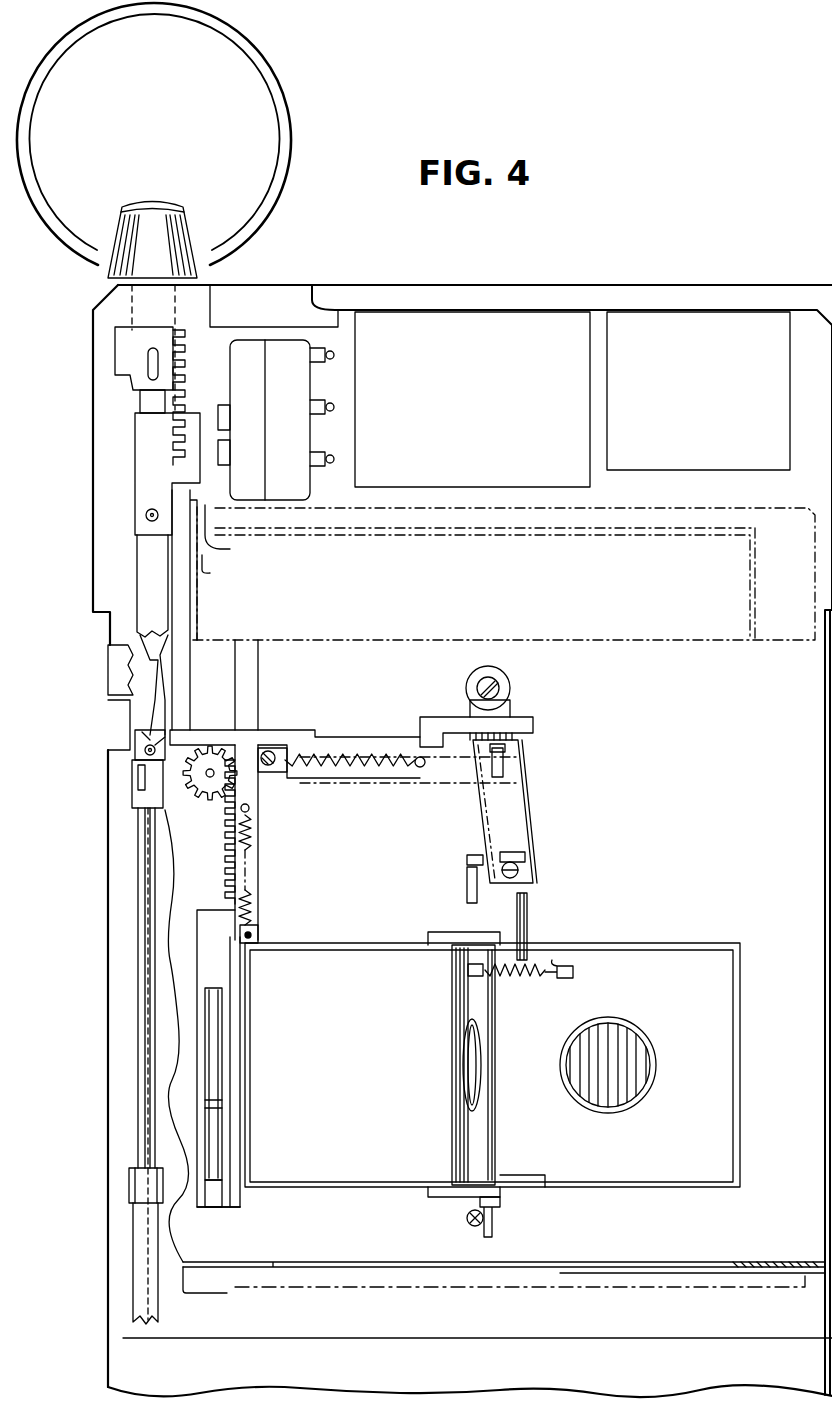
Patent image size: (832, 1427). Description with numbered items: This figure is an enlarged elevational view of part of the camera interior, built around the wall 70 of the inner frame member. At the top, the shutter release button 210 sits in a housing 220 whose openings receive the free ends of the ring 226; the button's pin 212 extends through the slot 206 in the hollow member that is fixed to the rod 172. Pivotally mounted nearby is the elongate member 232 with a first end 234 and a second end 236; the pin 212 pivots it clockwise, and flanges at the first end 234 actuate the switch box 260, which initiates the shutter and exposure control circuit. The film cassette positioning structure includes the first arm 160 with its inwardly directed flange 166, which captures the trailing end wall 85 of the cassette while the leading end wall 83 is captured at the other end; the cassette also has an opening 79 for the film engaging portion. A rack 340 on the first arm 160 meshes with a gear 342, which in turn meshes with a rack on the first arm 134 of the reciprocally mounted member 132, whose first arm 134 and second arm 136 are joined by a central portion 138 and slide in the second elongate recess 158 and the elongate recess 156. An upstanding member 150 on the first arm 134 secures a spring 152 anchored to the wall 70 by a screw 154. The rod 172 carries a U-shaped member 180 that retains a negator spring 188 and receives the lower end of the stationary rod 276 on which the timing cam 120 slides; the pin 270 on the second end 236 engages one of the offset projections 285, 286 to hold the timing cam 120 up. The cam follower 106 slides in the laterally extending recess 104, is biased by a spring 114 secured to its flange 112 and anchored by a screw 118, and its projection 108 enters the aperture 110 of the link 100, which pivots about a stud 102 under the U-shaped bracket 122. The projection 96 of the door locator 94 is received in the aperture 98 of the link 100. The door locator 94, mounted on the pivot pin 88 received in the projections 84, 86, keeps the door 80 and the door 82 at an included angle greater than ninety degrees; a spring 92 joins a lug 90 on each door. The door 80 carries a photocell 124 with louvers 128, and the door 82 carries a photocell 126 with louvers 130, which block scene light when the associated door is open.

The wall 70 is at (674, 784).
The ring 226 is at (272, 96).
The shutter release button 210 is at (158, 200).
The housing 220 is at (170, 238).
The pin 212 is at (148, 352).
The slot 206 is at (148, 364).
The rack 340 is at (183, 382).
The switch box 260 is at (290, 388).
The first end 234 is at (140, 448).
The elongate member 232 is at (112, 504).
The second end 236 is at (148, 594).
The offset projection 286 is at (128, 665).
The offset projection 285 is at (163, 680).
The first arm 160 is at (190, 616).
The inwardly directed flange 166 is at (219, 549).
The opening 79 is at (219, 569).
The trailing end wall 85 is at (487, 510).
The second elongate recess 158 is at (262, 672).
The laterally extending recess 104 is at (333, 735).
The screw 118 is at (268, 768).
The spring 114 is at (310, 770).
The flange 112 is at (418, 768).
The cam follower 106 is at (472, 772).
The U-shaped bracket 122 is at (442, 717).
The stud 102 is at (502, 688).
The link 100 is at (497, 815).
The projection 108 is at (505, 765).
The aperture 110 is at (505, 748).
The aperture 98 is at (525, 856).
The projection 96 is at (519, 870).
The door locator 94 is at (528, 905).
The door 82 is at (690, 966).
The projection 86 is at (535, 956).
The lug 90 is at (468, 970).
The spring 92 is at (513, 978).
The door 80 is at (452, 1012).
The louvers 128 is at (480, 1050).
The photocell 124 is at (478, 1090).
The photocell 126 is at (622, 1100).
The louvers 130 is at (635, 1065).
The projection 84 is at (518, 1178).
The pivot pin 88 is at (483, 1222).
The leading end wall 83 is at (623, 1292).
The pin 270 is at (135, 745).
The timing cam 120 is at (137, 795).
The stationary rod 276 is at (138, 772).
The gear 342 is at (208, 792).
The first arm 134 is at (258, 896).
The reciprocally mounted member 132 is at (290, 913).
The upstanding member 150 is at (250, 812).
The spring 152 is at (250, 850).
The screw 154 is at (252, 935).
The central portion 138 is at (213, 928).
The second arm 136 is at (228, 1022).
The elongate recess 156 is at (232, 1212).
The rod 172 is at (138, 1045).
The U-shaped member 180 is at (129, 1183).
The negator spring 188 is at (133, 1270).